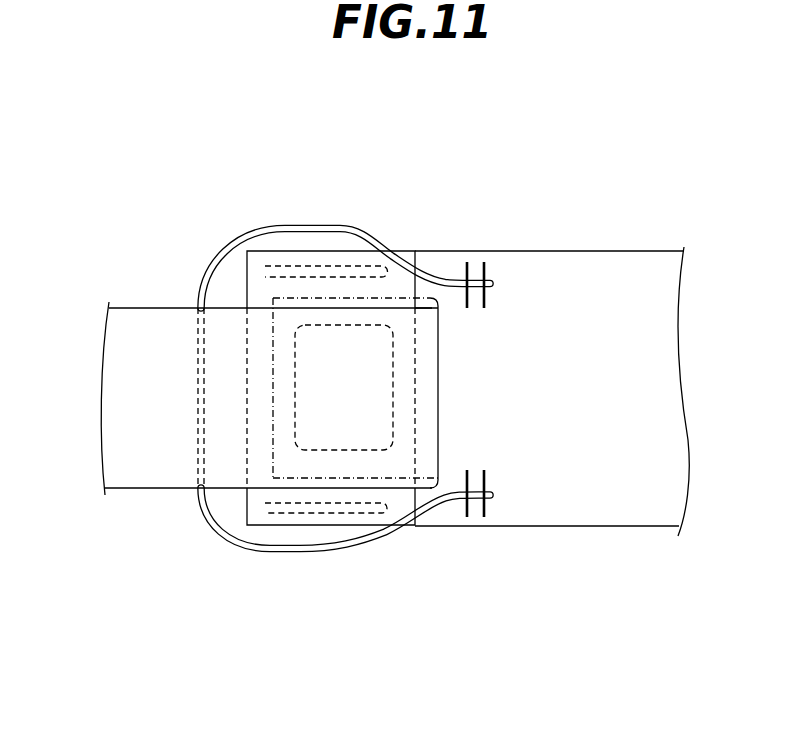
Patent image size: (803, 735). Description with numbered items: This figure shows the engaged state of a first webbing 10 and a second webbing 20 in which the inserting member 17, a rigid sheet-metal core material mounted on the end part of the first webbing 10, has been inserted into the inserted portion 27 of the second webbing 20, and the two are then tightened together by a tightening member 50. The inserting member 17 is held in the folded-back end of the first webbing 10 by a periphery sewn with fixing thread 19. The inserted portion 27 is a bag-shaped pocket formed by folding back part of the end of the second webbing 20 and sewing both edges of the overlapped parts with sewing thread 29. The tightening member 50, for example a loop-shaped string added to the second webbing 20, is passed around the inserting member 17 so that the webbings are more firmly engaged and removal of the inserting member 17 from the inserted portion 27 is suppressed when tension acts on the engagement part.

The first webbing 10 is at (162, 308).
The second webbing 20 is at (588, 251).
The tightening member 50 is at (212, 258).
The sewing thread 29 is at (318, 265).
The inserted portion 27 is at (443, 260).
The inserting member 17 is at (398, 383).
The fixing thread 19 is at (378, 468).